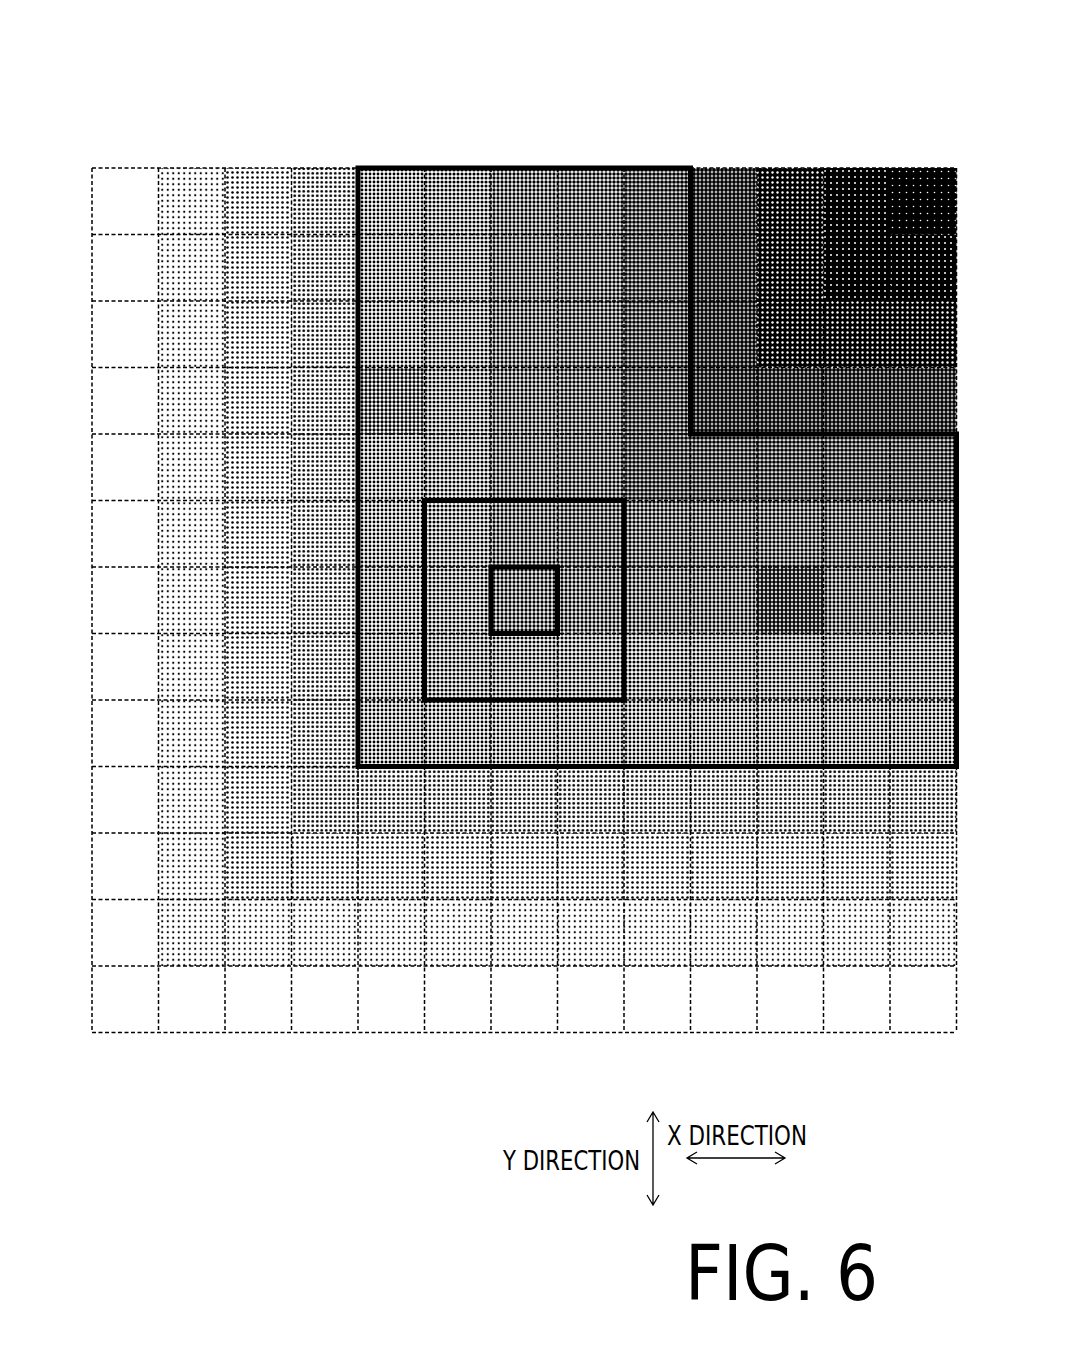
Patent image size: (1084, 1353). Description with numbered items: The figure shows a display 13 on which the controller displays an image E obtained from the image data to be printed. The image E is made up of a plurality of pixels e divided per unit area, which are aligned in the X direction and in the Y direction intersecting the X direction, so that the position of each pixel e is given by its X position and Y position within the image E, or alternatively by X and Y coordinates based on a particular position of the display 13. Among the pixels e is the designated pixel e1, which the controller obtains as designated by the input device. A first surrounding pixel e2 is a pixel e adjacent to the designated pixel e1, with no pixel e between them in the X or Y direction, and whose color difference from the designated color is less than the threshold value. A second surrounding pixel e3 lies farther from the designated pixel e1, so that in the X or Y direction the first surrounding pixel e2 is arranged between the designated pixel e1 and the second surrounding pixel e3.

The display 13 is at (567, 97).
The image E is at (533, 112).
The pixel e is at (499, 562).
The designated pixel e1 is at (522, 612).
The first surrounding pixel e2 is at (460, 545).
The second surrounding pixel e3 is at (397, 385).